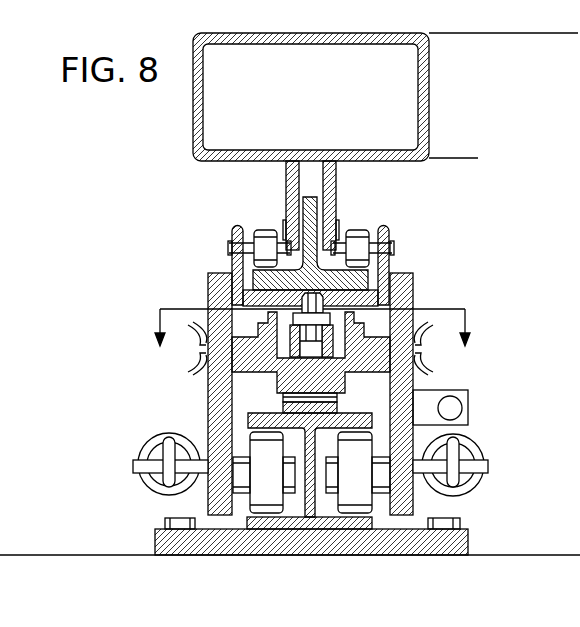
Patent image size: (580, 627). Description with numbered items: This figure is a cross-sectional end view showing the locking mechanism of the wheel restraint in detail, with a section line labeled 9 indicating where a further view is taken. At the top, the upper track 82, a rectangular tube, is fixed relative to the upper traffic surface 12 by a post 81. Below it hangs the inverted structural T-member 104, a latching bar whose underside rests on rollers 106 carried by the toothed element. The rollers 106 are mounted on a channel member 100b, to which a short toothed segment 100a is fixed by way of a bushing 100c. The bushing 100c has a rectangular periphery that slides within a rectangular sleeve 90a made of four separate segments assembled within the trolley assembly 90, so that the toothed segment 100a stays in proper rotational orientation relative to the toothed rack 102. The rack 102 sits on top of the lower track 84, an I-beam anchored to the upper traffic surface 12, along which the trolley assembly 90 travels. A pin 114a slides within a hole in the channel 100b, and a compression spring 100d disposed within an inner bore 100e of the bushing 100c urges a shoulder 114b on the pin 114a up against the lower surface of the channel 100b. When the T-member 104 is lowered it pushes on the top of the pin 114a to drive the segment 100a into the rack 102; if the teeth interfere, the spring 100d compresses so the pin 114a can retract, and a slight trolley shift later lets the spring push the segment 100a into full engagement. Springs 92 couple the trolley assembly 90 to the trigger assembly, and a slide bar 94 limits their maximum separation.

The upper track 82 is at (193, 118).
The post 81 is at (466, 158).
The inverted structural T-member 104 is at (313, 197).
The rollers 106 is at (262, 230).
The channel member 100b is at (233, 233).
The shoulder 114b is at (389, 242).
The inner bore 100e is at (272, 290).
The pin 114a is at (322, 303).
The section line 9- 9 is at (312, 327).
The compression spring 100d is at (233, 344).
The bushing 100c is at (415, 350).
The rectangular sleeve 90a is at (240, 390).
The toothed segment 100a is at (278, 395).
The toothed rack 102 is at (330, 404).
The trolley assembly 90 is at (415, 503).
The lower track 84 is at (265, 432).
The springs 92 is at (148, 487).
The slide bar 94 is at (470, 399).
The upper traffic surface 12 is at (155, 549).